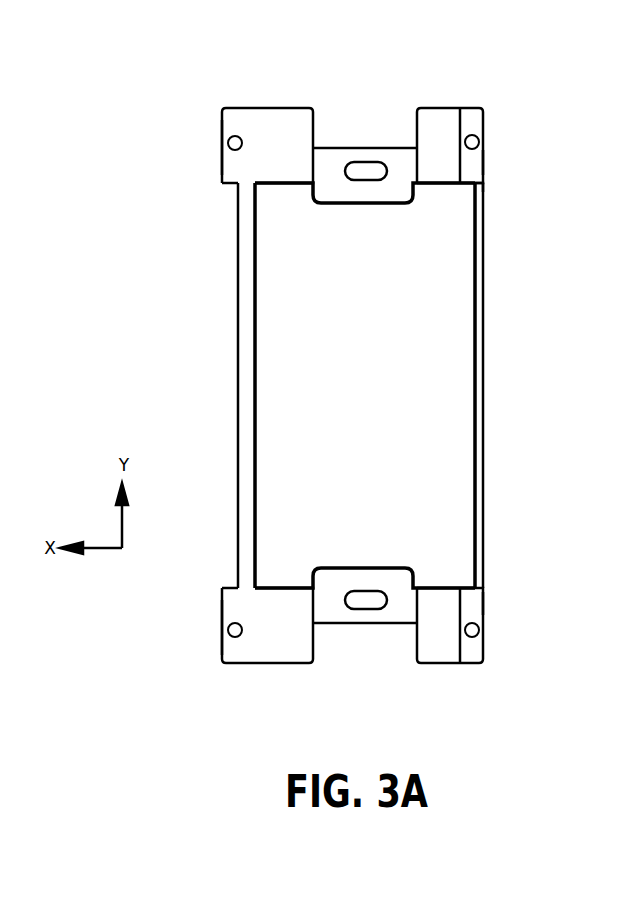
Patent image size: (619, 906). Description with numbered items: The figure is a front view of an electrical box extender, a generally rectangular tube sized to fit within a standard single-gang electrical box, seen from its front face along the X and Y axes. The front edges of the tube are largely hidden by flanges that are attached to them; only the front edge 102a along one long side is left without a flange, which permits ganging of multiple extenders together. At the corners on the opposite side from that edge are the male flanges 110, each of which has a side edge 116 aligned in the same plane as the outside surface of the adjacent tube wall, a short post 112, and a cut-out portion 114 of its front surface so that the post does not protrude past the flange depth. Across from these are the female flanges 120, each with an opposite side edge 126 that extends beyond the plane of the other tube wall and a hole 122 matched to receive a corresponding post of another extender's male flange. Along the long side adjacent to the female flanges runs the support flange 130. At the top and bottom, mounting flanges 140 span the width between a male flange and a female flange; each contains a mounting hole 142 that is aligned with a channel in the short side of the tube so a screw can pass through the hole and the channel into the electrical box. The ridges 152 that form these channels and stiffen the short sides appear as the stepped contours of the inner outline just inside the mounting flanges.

The front edge 102a is at (478, 387).
The male flange 110 is at (442, 118).
The short post 112 is at (478, 130).
The cut-out portion 114 is at (485, 160).
The side edge 116 is at (492, 178).
The female flange 120 is at (277, 117).
The hole 122 is at (228, 140).
The opposite side edge 126 is at (210, 170).
The support flange 130 is at (245, 388).
The mounting flange 140 is at (336, 157).
The mounting hole 142 is at (387, 162).
The ridge 152 is at (413, 203).